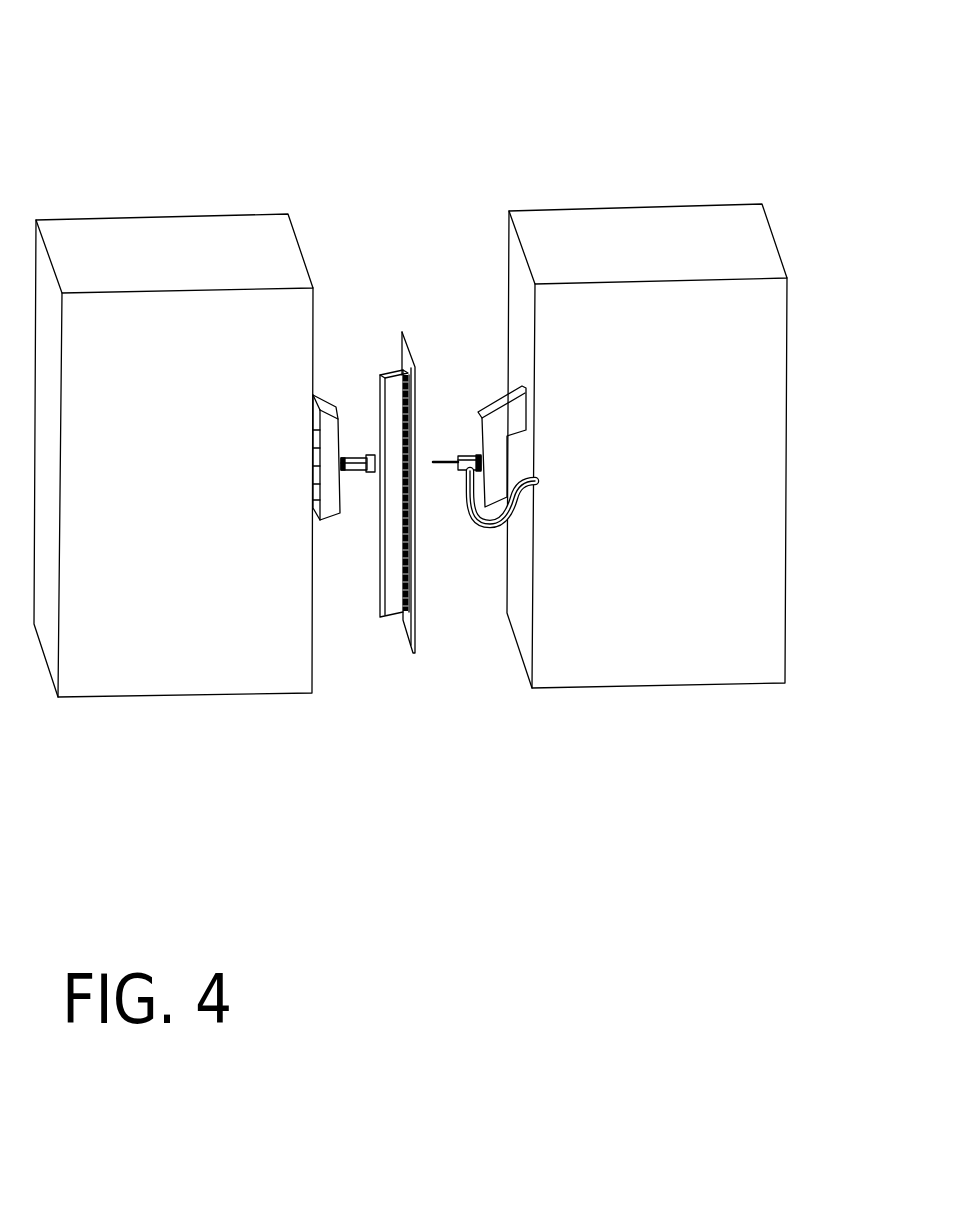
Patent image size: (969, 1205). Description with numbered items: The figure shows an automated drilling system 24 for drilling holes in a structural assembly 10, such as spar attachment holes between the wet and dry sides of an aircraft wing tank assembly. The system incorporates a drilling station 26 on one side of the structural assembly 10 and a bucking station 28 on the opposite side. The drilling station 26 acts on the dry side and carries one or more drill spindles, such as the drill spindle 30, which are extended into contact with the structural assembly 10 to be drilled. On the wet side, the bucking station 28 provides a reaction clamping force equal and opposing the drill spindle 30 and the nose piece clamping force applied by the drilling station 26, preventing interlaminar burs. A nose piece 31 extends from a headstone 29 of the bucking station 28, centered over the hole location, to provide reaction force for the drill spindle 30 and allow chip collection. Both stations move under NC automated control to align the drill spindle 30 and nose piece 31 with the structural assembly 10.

The structural assembly 10 is at (402, 332).
The automated drilling system 24 is at (675, 95).
The drilling station 26 is at (605, 660).
The bucking station 28 is at (167, 657).
The headstone 29 is at (332, 502).
The drill spindle 30 is at (467, 513).
The nose piece 31 is at (362, 458).